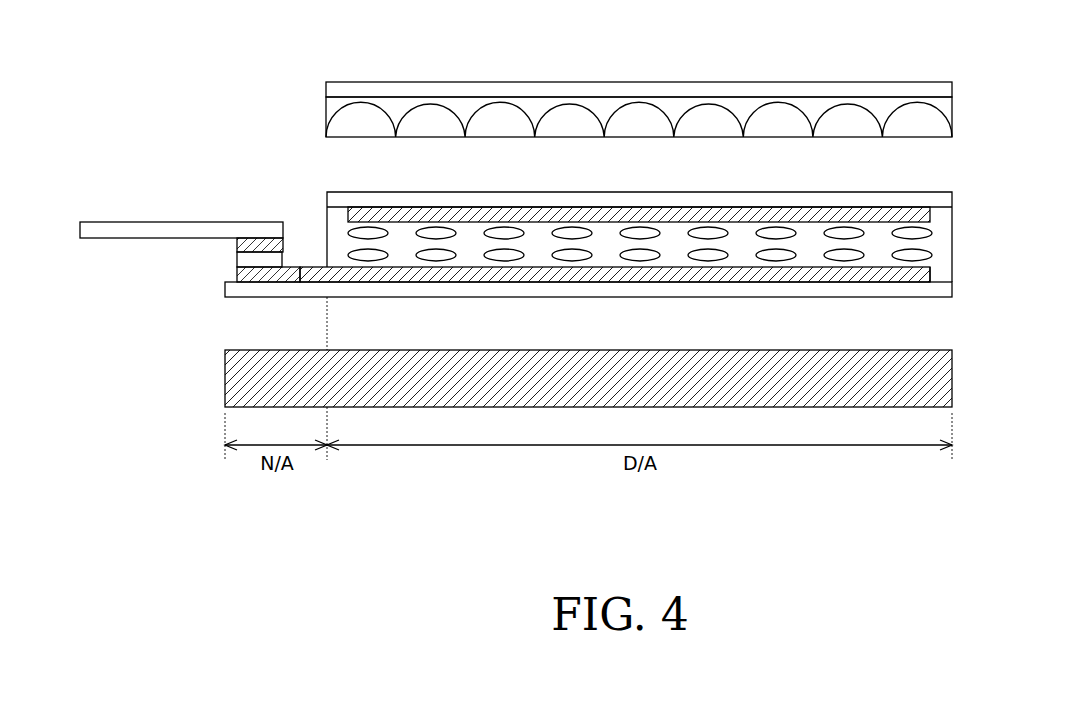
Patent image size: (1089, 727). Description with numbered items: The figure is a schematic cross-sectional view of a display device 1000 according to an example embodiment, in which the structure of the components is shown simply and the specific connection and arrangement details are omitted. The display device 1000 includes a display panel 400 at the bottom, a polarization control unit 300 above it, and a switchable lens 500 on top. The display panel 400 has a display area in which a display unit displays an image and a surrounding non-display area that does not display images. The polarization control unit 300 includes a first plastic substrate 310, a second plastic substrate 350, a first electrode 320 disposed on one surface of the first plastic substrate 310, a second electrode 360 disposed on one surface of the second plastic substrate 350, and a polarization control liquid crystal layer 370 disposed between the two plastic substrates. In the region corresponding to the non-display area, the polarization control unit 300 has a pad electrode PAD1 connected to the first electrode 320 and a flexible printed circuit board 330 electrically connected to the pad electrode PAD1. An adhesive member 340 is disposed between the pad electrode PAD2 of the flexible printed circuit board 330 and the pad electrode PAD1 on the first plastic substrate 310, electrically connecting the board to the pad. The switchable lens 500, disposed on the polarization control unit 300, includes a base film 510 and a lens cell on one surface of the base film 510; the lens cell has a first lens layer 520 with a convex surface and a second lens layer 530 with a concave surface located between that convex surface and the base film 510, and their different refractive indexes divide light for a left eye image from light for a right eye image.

The display device 1000 is at (917, 45).
The switchable lens 500 is at (698, 107).
The base film 510 is at (935, 90).
The second lens layer 530 is at (905, 101).
The first lens layer 520 is at (935, 127).
The polarization control unit 300 is at (577, 243).
The second plastic substrate 350 is at (940, 198).
The second electrode 360 is at (918, 216).
The polarization control liquid crystal layer 370 is at (918, 233).
The first electrode 320 is at (918, 272).
The first plastic substrate 310 is at (938, 290).
The flexible printed circuit board 330 is at (208, 228).
The adhesive member 340 is at (250, 259).
The pad electrode PAD1 is at (247, 275).
The pad electrode PAD2 is at (267, 246).
The display panel 400 is at (938, 372).